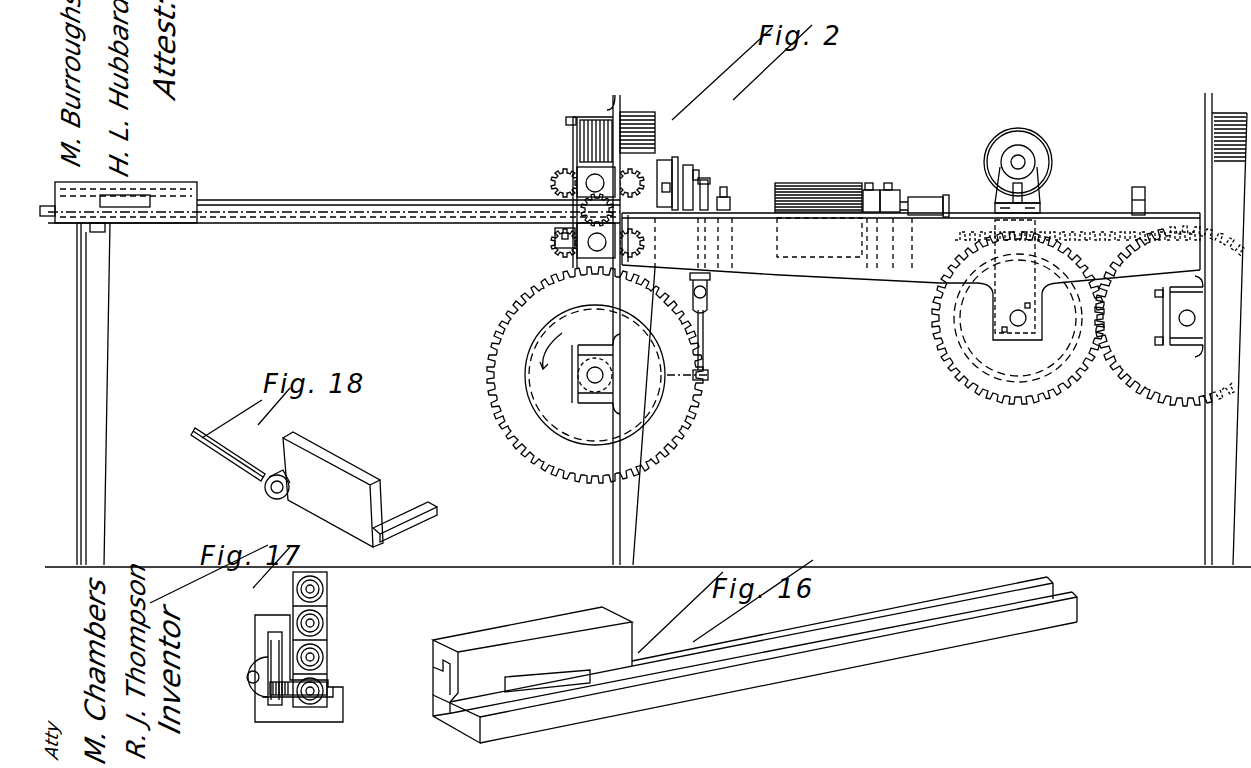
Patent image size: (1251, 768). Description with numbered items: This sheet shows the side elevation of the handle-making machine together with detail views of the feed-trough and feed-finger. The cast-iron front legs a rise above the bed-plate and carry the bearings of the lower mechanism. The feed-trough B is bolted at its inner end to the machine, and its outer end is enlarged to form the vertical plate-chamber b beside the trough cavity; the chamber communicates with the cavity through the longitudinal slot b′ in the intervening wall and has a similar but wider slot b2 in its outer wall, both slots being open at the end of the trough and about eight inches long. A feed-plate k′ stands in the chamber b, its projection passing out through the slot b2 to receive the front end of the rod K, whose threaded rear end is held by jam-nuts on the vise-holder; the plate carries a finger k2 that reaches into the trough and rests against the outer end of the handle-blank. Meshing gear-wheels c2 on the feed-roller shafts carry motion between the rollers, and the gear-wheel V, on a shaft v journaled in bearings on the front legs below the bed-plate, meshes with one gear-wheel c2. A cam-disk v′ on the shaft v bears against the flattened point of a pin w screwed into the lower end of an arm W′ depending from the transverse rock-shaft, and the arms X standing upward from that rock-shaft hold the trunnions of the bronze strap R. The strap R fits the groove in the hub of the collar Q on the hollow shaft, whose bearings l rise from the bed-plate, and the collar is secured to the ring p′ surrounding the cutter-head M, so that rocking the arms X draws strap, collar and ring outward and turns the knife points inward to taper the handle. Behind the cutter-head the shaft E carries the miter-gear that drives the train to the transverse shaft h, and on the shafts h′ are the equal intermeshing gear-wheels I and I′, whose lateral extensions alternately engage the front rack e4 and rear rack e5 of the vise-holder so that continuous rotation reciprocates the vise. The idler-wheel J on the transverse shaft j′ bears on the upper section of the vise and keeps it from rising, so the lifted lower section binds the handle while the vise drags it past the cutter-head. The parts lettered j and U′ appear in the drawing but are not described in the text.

In FIG. 2, the rod K is at (455, 195).
In FIG. 18, the rod K is at (180, 452).
In FIG. 2, the feed-trough B is at (300, 258).
In FIG. 16, the feed-trough B is at (748, 700).
In FIG. 2, the finger k2 is at (45, 218).
In FIG. 18, the finger k2 is at (412, 513).
In FIG. 17, the finger k2 is at (300, 692).
In FIG. 2, the gear-wheels c2 is at (558, 268).
In FIG. 2, the cutter-head M is at (676, 158).
In FIG. 2, the metal ring p′ is at (688, 165).
In FIG. 2, the collar Q is at (700, 178).
In FIG. 2, the bronze strap R is at (706, 182).
In FIG. 2, the bearings l is at (727, 197).
In FIG. 2, the roller U′ is at (806, 188).
In FIG. 2, the shaft E is at (930, 205).
In FIG. 2, the idler-wheel J is at (1010, 142).
In FIG. 2, the pulley hub j is at (1003, 160).
In FIG. 2, the transverse shaft j′ is at (1035, 162).
In FIG. 2, the arms X is at (706, 244).
In FIG. 2, the front rack e4 is at (963, 240).
In FIG. 2, the rear rack e5 is at (1164, 314).
In FIG. 2, the transverse shaft h is at (1010, 318).
In FIG. 2, the shaft h′ is at (1180, 318).
In FIG. 2, the gear-wheel I is at (928, 372).
In FIG. 2, the gear-wheel I′ is at (1145, 400).
In FIG. 2, the gear-wheel V is at (525, 313).
In FIG. 2, the shaft v is at (587, 375).
In FIG. 2, the cam-disk v′ is at (568, 425).
In FIG. 2, the pin w is at (694, 371).
In FIG. 2, the arm W′ is at (706, 356).
In FIG. 2, the front legs a is at (633, 510).
In FIG. 18, the feed-plate k′ is at (342, 465).
In FIG. 17, the feed-plate k′ is at (247, 678).
In FIG. 17, the plate-chamber b is at (273, 632).
In FIG. 16, the plate-chamber b is at (445, 677).
In FIG. 17, the longitudinal slot b2 is at (256, 660).
In FIG. 16, the longitudinal slot b2 is at (433, 687).
In FIG. 17, the longitudinal slot b′ is at (300, 690).
In FIG. 16, the longitudinal slot b′ is at (505, 690).